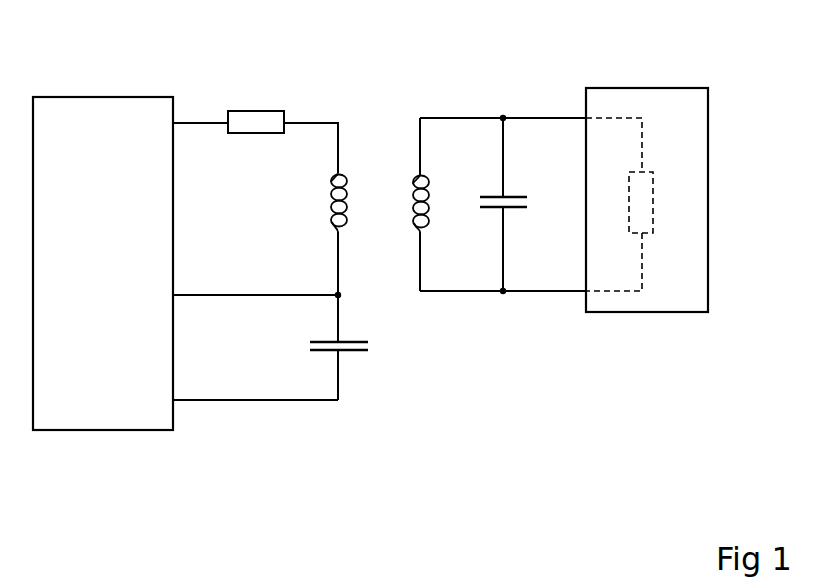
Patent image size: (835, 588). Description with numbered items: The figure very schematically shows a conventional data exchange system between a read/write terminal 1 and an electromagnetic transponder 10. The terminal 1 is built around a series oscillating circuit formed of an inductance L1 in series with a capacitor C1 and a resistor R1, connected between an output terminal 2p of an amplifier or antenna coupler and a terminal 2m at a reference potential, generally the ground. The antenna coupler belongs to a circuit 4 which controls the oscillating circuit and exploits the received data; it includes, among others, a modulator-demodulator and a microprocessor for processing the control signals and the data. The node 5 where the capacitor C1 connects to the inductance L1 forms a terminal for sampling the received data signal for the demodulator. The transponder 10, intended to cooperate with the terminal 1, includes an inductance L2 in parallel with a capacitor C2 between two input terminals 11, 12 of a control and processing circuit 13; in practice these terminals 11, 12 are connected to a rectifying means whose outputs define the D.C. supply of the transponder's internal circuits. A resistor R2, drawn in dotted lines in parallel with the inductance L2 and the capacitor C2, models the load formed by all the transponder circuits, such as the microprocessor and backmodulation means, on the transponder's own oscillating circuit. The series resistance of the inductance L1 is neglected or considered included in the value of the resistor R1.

The read/write terminal 1 is at (243, 471).
The circuit for controlling the oscillating circuit 4 is at (78, 97).
The output terminal 2p is at (173, 123).
The reference terminal 2m is at (173, 400).
The node 5 is at (340, 296).
The resistor R1 is at (256, 110).
The inductance L1 is at (318, 202).
The capacitor C1 is at (345, 361).
The inductance L2 is at (400, 204).
The capacitor C2 is at (508, 204).
The resistor R2 is at (635, 204).
The transponder 10 is at (665, 388).
The input terminal 11 is at (586, 118).
The input terminal 12 is at (586, 291).
The control and processing circuit 13 is at (708, 135).